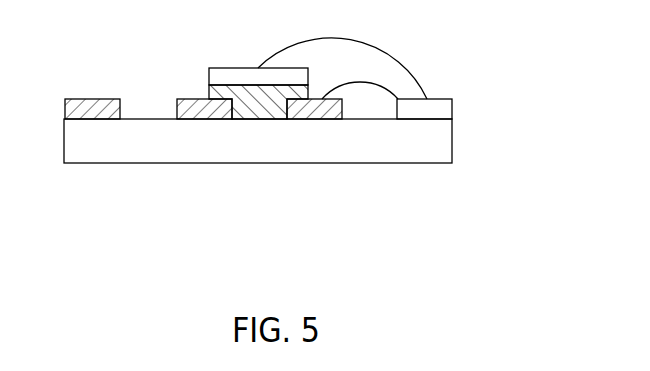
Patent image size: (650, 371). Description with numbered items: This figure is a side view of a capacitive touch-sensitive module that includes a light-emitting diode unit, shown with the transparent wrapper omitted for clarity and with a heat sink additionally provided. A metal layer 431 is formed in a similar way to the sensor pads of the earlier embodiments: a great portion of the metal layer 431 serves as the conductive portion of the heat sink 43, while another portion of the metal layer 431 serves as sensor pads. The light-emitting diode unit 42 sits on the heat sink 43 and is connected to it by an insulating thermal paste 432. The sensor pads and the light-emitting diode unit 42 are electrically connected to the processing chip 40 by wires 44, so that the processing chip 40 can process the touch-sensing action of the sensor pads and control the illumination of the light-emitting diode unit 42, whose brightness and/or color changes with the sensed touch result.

The processing chip 40 is at (410, 110).
The light-emitting diode unit 42 is at (240, 75).
The heat sink 43 is at (85, 152).
The metal layer 431 is at (103, 100).
The insulating thermal paste 432 is at (261, 102).
The wires 44 is at (352, 38).